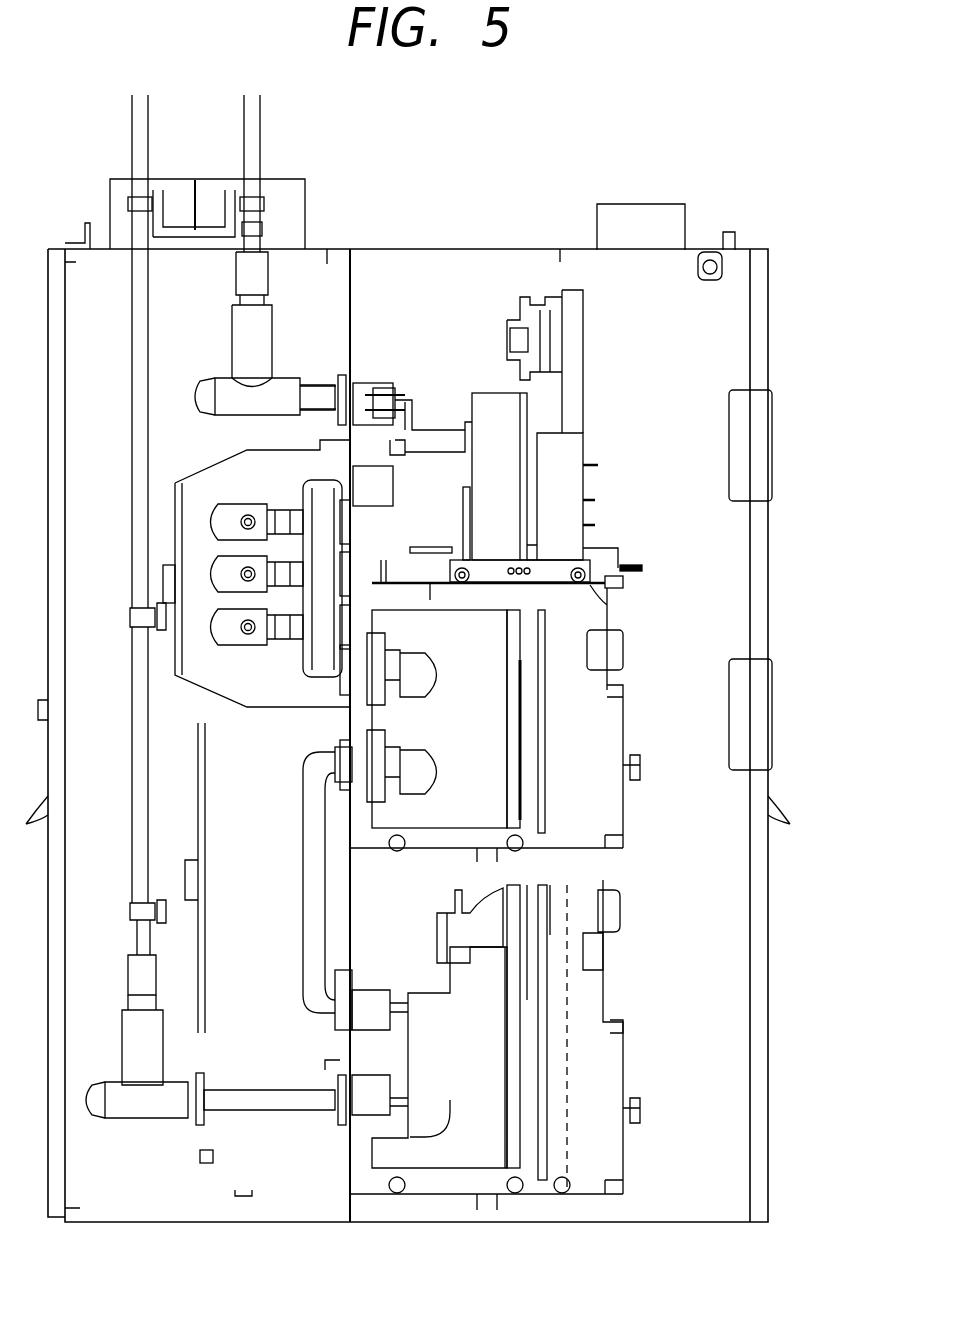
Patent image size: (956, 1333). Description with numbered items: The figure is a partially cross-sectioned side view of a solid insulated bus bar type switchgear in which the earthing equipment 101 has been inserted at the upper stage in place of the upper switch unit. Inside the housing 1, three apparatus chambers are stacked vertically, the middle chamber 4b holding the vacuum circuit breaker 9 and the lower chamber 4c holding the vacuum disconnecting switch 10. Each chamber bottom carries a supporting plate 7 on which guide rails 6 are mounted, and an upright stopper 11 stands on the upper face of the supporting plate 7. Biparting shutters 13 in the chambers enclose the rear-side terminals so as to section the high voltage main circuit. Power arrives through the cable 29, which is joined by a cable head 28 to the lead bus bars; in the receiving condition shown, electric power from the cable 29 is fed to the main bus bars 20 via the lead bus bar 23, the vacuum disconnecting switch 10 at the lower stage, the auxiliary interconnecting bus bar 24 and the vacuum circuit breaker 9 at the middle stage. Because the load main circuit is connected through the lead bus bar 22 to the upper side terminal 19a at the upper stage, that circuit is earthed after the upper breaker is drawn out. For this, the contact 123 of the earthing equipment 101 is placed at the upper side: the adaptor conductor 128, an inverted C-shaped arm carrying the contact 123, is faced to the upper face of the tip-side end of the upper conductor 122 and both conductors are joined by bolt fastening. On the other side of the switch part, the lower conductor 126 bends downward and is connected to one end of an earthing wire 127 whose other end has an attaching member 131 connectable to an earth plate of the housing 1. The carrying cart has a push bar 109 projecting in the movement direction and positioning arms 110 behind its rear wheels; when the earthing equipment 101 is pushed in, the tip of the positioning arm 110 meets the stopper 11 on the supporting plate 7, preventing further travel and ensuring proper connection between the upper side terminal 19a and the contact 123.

The housing 1 is at (770, 250).
The cable 29 is at (132, 132).
The cable head 28 is at (197, 393).
The lead bus bar 22 is at (320, 383).
The upper side terminal 19a is at (364, 383).
The contact 123 is at (393, 388).
The upper conductor 122 is at (452, 393).
The adaptor conductor 128 is at (422, 425).
The earthing equipment 101 is at (598, 440).
The lower conductor 126 is at (458, 500).
The push bar 109 is at (432, 547).
The earthing wire 127 is at (615, 548).
The attaching member 131 is at (641, 563).
The stopper 11 is at (378, 562).
The positioning arm 110 is at (433, 585).
The guide rail 6 is at (563, 590).
The supporting plate 7 is at (610, 605).
The main bus bar 20 is at (240, 634).
The shutter 13 is at (545, 713).
The vacuum circuit breaker 9 is at (483, 773).
The middle chamber 4b is at (611, 802).
The auxiliary interconnecting bus bar 24 is at (312, 886).
The lower chamber 4c is at (611, 1058).
The lead bus bar 23 is at (260, 1103).
The vacuum disconnecting switch 10 is at (453, 1150).